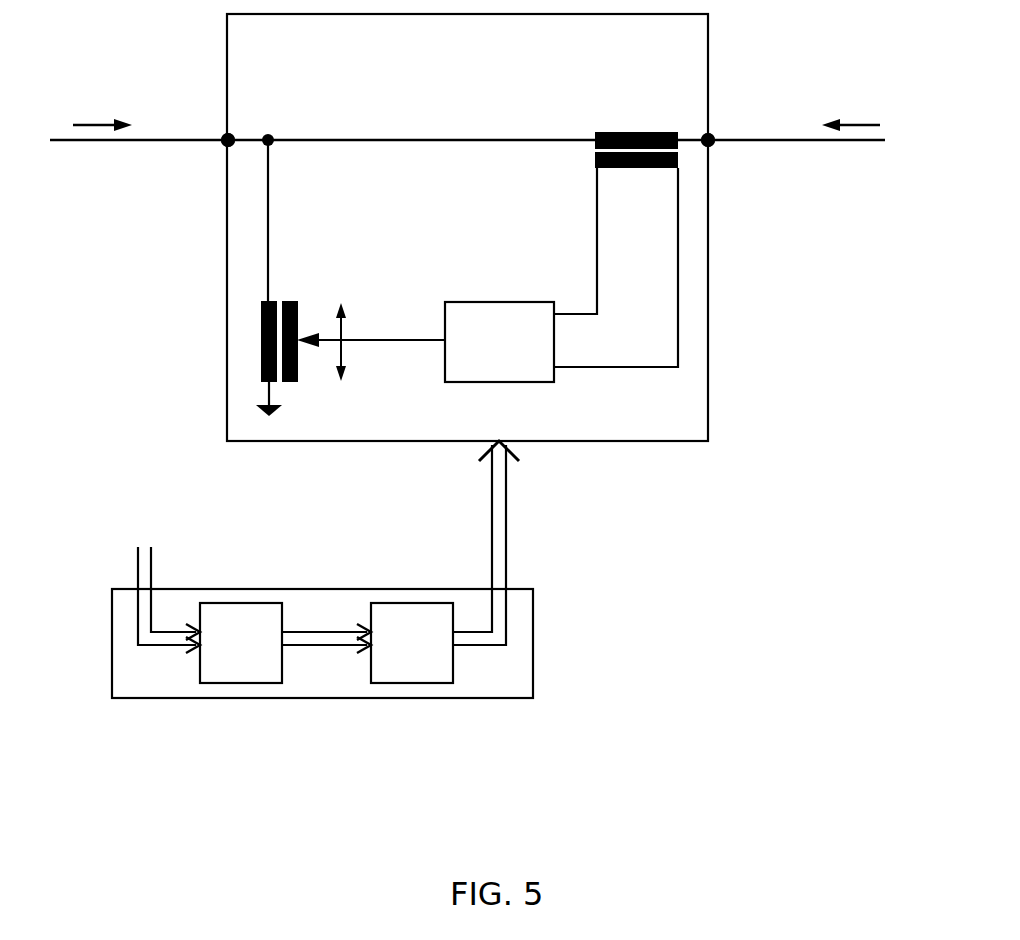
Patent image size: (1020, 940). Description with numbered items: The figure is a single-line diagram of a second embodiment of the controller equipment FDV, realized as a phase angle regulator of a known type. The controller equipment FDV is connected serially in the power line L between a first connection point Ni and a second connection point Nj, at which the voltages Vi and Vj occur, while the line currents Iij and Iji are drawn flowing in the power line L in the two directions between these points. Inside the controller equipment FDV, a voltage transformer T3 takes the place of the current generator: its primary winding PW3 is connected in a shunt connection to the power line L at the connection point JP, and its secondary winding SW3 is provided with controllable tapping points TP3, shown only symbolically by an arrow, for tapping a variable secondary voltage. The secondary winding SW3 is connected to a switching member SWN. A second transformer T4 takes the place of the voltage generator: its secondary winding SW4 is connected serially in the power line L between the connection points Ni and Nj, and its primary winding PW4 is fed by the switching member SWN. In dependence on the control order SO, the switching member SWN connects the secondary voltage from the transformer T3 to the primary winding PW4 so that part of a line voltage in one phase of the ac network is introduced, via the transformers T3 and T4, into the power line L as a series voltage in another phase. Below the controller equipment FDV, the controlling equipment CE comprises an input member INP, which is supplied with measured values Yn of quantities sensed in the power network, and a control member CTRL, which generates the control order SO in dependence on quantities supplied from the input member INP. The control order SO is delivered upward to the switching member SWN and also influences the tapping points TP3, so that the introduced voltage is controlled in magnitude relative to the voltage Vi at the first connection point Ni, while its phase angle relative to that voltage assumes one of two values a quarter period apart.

The controller equipment FDV is at (709, 273).
The power line L is at (123, 140).
The first connection point Ni is at (228, 140).
The second connection point Nj is at (708, 140).
The voltage at the first connection point Vi is at (228, 140).
The voltage at the second connection point Vj is at (708, 140).
The connection point JP is at (268, 140).
The current from the first to the second connection point Iij is at (80, 82).
The current from the second to the first connection point Iji is at (860, 82).
The primary winding PW3 is at (261, 362).
The secondary winding SW3 is at (288, 382).
The voltage transformer T3 is at (280, 290).
The controllable tapping points TP3 is at (353, 348).
The switching member SWN is at (473, 302).
The secondary winding SW4 is at (628, 132).
The transformer T4 is at (585, 153).
The primary winding PW4 is at (602, 168).
The control order SO is at (502, 543).
The controlling equipment CE is at (533, 642).
The measured values Yn is at (163, 582).
The input member INP is at (242, 683).
The control member CTRL is at (412, 683).